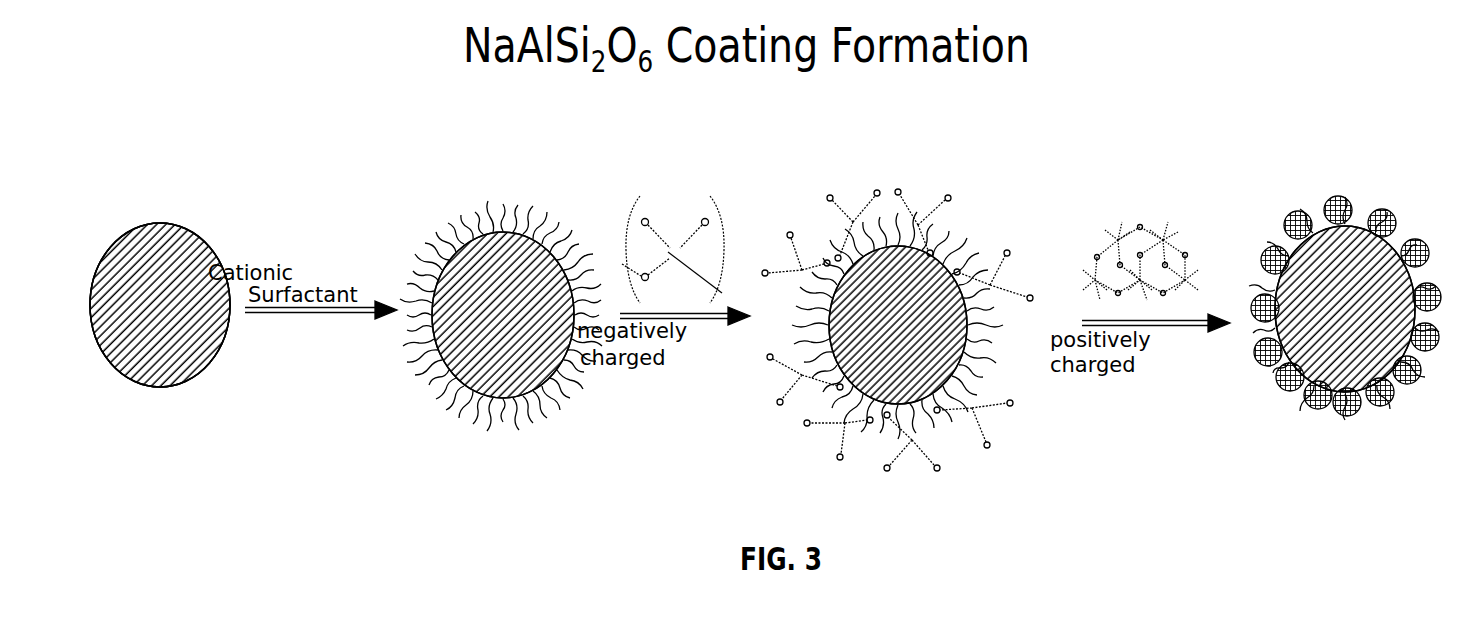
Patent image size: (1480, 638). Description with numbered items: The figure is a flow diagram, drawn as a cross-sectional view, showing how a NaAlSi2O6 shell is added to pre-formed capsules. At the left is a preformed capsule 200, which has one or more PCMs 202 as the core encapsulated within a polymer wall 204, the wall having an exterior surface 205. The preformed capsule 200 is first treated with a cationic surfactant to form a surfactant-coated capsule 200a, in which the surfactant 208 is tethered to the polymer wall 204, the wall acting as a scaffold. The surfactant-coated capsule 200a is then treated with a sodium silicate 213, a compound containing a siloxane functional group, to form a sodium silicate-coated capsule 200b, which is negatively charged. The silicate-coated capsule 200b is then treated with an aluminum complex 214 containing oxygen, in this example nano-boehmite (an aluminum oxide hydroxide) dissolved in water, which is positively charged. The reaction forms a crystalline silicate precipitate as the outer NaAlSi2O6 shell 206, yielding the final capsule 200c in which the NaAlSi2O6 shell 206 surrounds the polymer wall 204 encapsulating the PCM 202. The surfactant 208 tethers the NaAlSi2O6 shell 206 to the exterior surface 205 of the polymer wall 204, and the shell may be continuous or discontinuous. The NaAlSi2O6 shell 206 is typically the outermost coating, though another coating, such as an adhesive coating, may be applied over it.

The preformed capsule 200 is at (160, 200).
The surfactant-coated capsule 200a is at (492, 196).
The sodium silicate-coated capsule 200b is at (872, 156).
The capsule 200c is at (1318, 182).
The PCM 202 is at (172, 283).
The polymer wall 204 is at (213, 355).
The exterior surface 205 is at (114, 243).
The NaAlSi2O6 shell 206 is at (1307, 408).
The surfactant 208 is at (443, 223).
The sodium silicate 213 is at (673, 200).
The aluminum complex 214 is at (1138, 203).